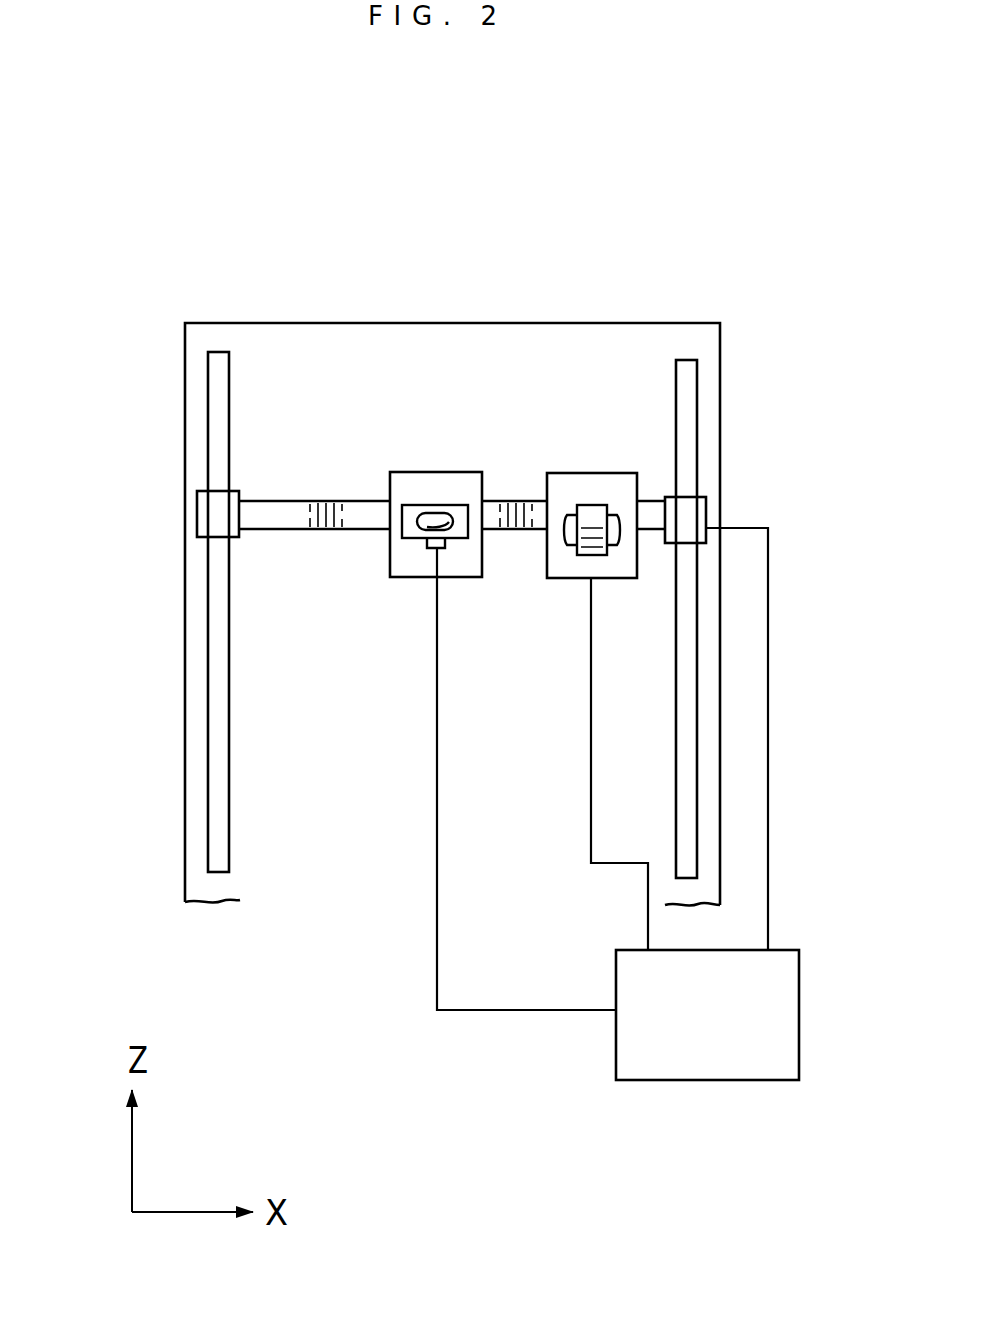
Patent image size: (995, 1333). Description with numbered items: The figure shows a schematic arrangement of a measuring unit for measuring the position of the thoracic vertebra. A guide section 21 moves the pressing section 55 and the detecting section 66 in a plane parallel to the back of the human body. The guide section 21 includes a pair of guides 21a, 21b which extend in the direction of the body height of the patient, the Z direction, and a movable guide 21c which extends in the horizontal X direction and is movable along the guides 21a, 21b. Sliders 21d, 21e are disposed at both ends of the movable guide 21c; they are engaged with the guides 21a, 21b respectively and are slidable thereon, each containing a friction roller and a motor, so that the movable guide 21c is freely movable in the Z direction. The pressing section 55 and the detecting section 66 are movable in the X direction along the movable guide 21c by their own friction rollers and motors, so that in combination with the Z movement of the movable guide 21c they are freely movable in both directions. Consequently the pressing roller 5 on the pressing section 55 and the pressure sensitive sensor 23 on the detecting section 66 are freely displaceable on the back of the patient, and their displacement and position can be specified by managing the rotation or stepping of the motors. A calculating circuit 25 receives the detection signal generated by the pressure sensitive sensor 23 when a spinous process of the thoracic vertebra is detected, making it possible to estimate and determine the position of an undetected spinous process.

The guide section 21 is at (256, 445).
The guide 21a is at (692, 415).
The guide 21b is at (210, 424).
The movable guide 21c is at (302, 532).
The slider 21d is at (708, 505).
The slider 21e is at (198, 519).
The detecting section 66 is at (414, 463).
The pressure sensitive sensor 23 is at (437, 513).
The pressing section 55 is at (570, 463).
The pressing roller 5 is at (595, 510).
The calculating circuit 25 is at (732, 1082).